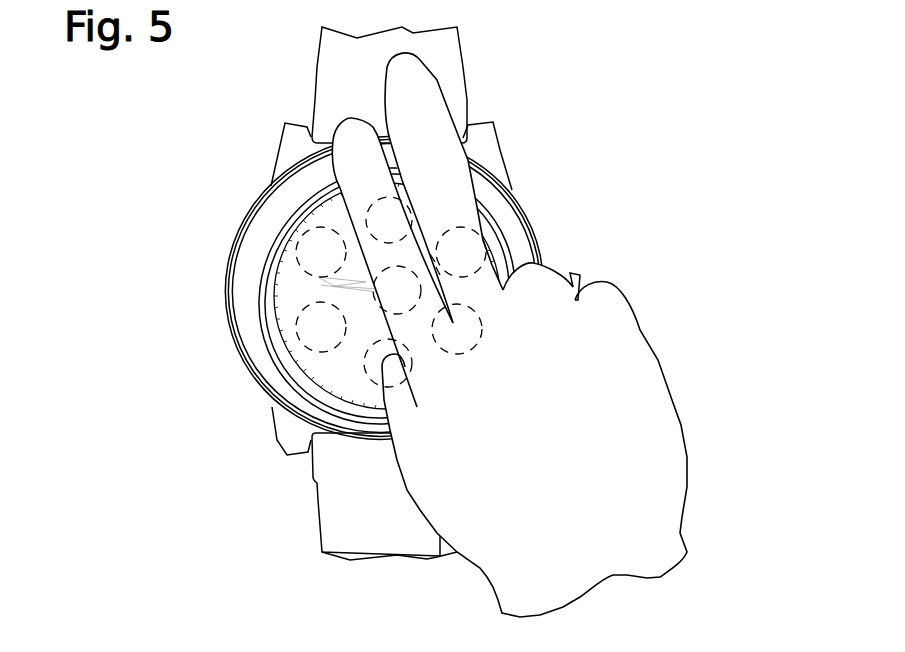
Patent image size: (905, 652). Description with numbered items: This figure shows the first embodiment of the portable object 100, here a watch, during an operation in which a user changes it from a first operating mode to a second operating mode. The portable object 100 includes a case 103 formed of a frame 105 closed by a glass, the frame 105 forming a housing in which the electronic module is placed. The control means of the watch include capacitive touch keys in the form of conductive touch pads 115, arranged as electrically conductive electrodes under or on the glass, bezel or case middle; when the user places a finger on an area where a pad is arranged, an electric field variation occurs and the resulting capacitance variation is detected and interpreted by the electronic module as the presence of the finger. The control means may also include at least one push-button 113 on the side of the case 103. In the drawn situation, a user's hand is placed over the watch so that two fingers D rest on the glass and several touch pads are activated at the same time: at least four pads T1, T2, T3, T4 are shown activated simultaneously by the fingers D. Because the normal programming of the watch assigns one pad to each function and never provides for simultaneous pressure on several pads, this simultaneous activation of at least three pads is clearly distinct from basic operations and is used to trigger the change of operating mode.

The portable object 100 is at (647, 181).
The case 103 is at (512, 188).
The frame 105 is at (363, 293).
The push-button 113 is at (575, 277).
The conductive touch pads 115 is at (296, 266).
The fingers D is at (423, 107).
The pad T1 is at (378, 223).
The pad T2 is at (457, 236).
The pad T3 is at (470, 327).
The pad T4 is at (392, 287).